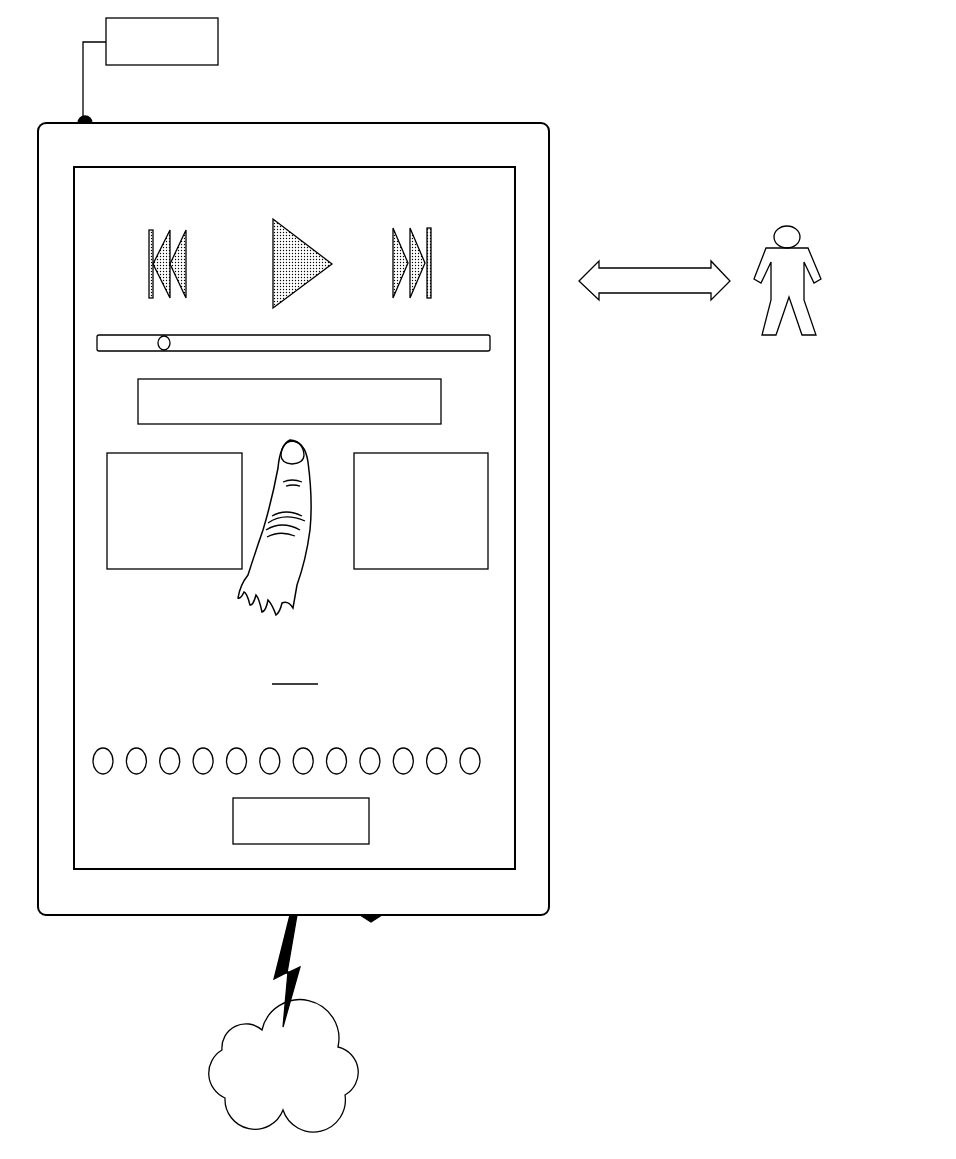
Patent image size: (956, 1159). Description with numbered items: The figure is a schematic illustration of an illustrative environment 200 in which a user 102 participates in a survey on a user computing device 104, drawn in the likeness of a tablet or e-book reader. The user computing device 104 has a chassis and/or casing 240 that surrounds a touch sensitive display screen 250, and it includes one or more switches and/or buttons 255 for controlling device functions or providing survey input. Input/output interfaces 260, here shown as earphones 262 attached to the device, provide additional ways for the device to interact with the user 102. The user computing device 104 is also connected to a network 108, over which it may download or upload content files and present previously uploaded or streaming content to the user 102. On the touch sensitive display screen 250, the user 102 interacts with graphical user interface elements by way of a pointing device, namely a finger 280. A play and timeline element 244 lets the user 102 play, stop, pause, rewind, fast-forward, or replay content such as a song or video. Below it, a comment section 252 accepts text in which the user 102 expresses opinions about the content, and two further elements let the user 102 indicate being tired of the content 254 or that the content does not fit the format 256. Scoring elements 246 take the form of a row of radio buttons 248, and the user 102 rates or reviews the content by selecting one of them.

The illustrative environment 200 is at (820, 110).
The user 102 is at (797, 225).
The user computing device 104 is at (555, 162).
The network 108 is at (358, 1066).
The chassis and/or casing 240 is at (552, 644).
The play and timeline element 244 is at (412, 206).
The scoring elements 246 is at (349, 668).
The radio buttons 248 is at (233, 730).
The touch sensitive display screen 250 is at (519, 565).
The comment section 252 is at (441, 382).
The tired of the content element 254 is at (186, 572).
The switches and/or buttons 255 is at (375, 919).
The does not fit the format element 256 is at (438, 453).
The input/output interfaces 260 is at (92, 118).
The earphones 262 is at (219, 33).
The finger 280 is at (300, 573).